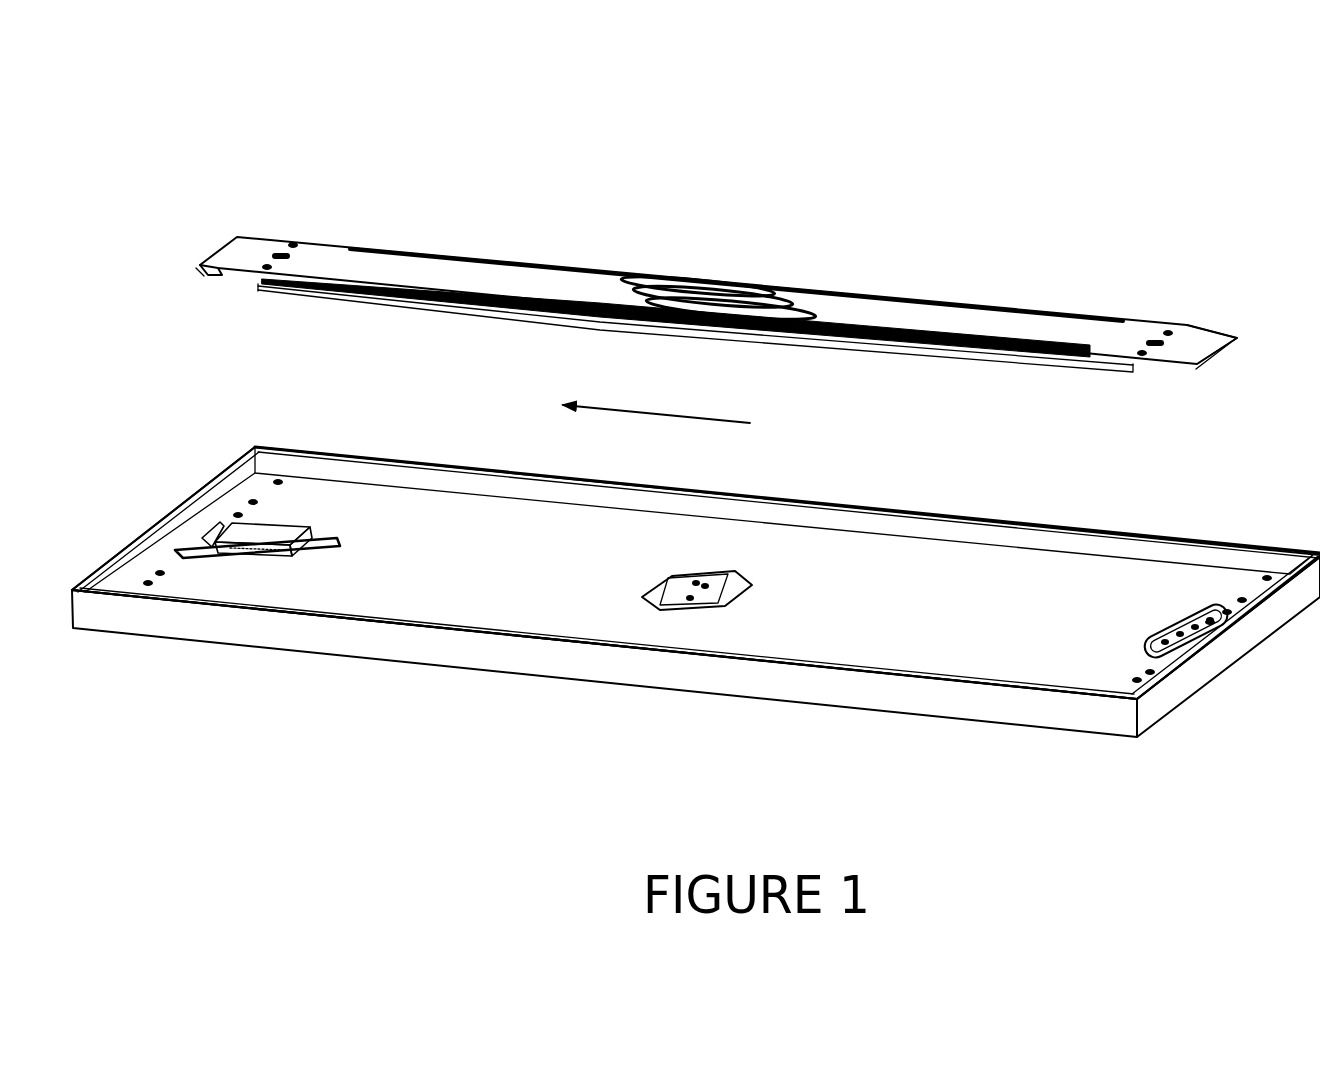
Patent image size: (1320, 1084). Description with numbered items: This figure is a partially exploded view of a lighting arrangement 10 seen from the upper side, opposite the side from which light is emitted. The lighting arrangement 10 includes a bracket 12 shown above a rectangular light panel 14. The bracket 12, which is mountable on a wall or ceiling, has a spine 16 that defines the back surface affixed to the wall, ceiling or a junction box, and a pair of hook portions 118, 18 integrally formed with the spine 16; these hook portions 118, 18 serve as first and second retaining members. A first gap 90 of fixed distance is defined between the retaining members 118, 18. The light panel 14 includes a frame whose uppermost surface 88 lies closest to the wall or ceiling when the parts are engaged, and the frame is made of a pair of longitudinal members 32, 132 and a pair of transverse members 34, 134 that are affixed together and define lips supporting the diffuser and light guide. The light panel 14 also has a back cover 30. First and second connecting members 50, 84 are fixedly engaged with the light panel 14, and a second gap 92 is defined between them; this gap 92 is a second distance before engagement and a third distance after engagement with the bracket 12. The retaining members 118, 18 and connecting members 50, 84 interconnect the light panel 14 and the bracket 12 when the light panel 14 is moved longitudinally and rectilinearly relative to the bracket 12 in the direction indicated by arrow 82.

The lighting arrangement 10 is at (243, 142).
The bracket 12 is at (632, 165).
The light panel 14 is at (243, 712).
The spine 16 is at (880, 310).
The hook portion 18 is at (1192, 370).
The back cover 30 is at (1100, 573).
The longitudinal member 32 is at (505, 463).
The transverse member 34 is at (133, 557).
The first connecting member 50 is at (357, 553).
The arrow 82 is at (693, 418).
The second connecting member 84 is at (1105, 622).
The uppermost surface 88 is at (1218, 607).
The first gap 90 is at (217, 292).
The second gap 92 is at (892, 560).
The hook portion 118 is at (200, 270).
The longitudinal member 132 is at (583, 655).
The transverse member 134 is at (1167, 686).